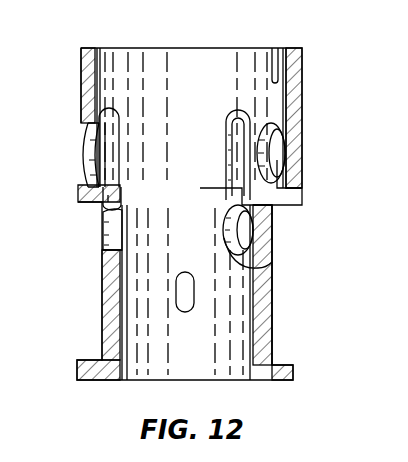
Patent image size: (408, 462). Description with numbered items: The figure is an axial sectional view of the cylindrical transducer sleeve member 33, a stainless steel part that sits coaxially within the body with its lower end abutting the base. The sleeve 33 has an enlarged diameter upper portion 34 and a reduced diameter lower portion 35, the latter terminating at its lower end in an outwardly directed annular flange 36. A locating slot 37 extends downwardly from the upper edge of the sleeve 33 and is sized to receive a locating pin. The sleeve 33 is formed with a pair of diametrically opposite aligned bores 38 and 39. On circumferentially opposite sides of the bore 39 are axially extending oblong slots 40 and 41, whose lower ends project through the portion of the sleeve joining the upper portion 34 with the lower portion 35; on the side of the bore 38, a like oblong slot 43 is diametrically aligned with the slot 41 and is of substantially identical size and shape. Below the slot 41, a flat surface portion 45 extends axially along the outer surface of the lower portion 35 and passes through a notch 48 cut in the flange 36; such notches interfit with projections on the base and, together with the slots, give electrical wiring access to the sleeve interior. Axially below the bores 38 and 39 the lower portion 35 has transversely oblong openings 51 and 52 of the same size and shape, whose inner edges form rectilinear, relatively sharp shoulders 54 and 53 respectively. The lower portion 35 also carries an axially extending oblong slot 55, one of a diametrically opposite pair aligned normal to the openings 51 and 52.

The transducer sleeve member 33 is at (183, 47).
The enlarged diameter upper portion 34 is at (304, 92).
The reduced diameter lower portion 35 is at (104, 322).
The annular flange 36 is at (77, 372).
The locating slot 37 is at (272, 65).
The bore 38 is at (86, 148).
The bore 39 is at (266, 150).
The oblong slot 40 is at (238, 126).
The oblong slot 41 is at (282, 196).
The oblong slot 43 is at (106, 116).
The flat surface portion 45 is at (274, 307).
The notch 48 is at (286, 378).
The opening 51 is at (110, 232).
The opening 52 is at (234, 232).
The shoulder 53 is at (268, 264).
The shoulder 54 is at (105, 256).
The oblong slot 55 is at (176, 300).